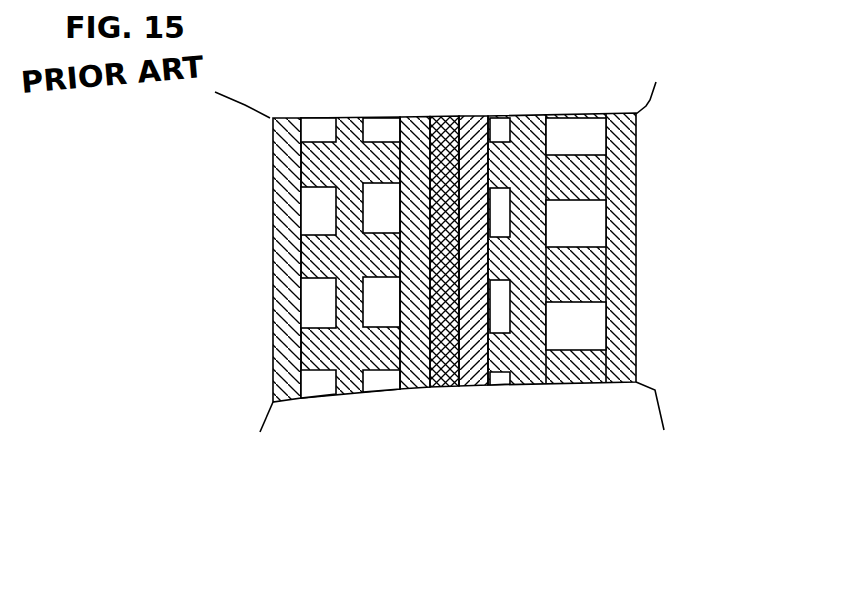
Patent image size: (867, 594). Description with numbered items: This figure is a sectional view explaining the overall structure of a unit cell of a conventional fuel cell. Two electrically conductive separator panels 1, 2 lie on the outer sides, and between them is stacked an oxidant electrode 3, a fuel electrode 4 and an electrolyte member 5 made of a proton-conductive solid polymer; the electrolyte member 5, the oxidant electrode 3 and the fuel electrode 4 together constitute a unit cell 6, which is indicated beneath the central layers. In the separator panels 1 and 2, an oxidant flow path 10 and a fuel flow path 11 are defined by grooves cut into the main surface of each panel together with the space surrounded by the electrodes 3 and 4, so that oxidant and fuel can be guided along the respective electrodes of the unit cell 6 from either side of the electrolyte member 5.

The electrically conductive separator panel 1 is at (295, 210).
The electrically conductive separator panel 2 is at (608, 202).
The oxidant electrode 3 is at (418, 387).
The fuel electrode 4 is at (478, 287).
The electrolyte member 5 is at (448, 387).
The unit cell 6 is at (446, 338).
The oxidant flow path 10 is at (378, 213).
The fuel flow path 11 is at (500, 216).